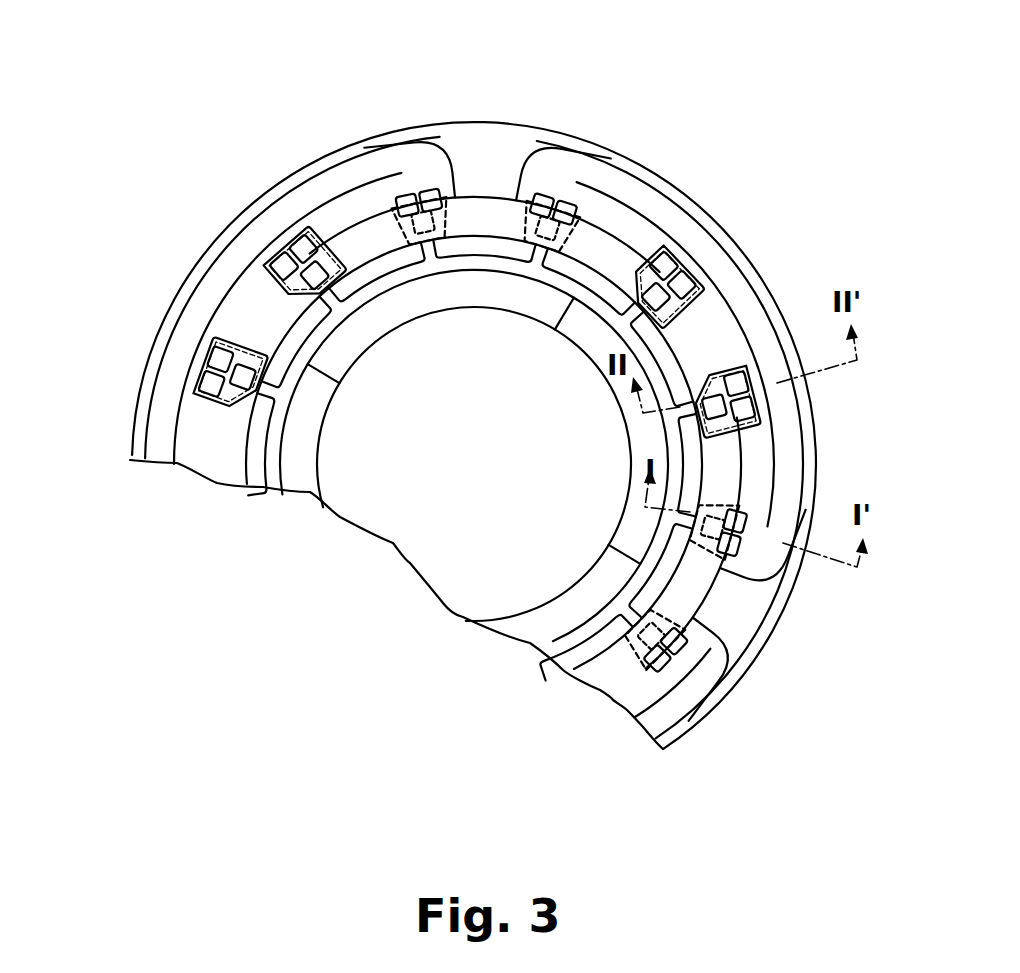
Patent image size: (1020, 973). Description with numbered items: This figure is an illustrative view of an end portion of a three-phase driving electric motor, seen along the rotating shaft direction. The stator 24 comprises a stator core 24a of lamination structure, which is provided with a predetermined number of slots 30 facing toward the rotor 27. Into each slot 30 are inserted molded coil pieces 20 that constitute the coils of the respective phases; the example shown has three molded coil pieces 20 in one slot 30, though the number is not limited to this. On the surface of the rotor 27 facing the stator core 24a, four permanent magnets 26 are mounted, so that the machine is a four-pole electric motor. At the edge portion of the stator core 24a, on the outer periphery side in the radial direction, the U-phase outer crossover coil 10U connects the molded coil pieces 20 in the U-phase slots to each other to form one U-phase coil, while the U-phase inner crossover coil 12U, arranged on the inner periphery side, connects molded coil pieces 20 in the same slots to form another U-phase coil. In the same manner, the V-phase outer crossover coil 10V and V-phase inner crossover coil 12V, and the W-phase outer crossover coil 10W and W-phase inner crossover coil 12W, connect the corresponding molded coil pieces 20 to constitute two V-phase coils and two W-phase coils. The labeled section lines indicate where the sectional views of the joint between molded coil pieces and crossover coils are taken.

The U-phase outer crossover coil 10U is at (733, 266).
The V-phase outer crossover coil 10V is at (250, 238).
The W-phase outer crossover coil 10W is at (693, 690).
The U-phase inner crossover coil 12U is at (218, 457).
The V-phase inner crossover coil 12V is at (703, 570).
The W-phase inner crossover coil 12W is at (482, 207).
The molded coil piece 20 is at (565, 190).
The stator 24 is at (418, 120).
The stator core 24a is at (520, 132).
The permanent magnet 26 is at (403, 307).
The rotor 27 is at (467, 548).
The slot 30 is at (204, 371).